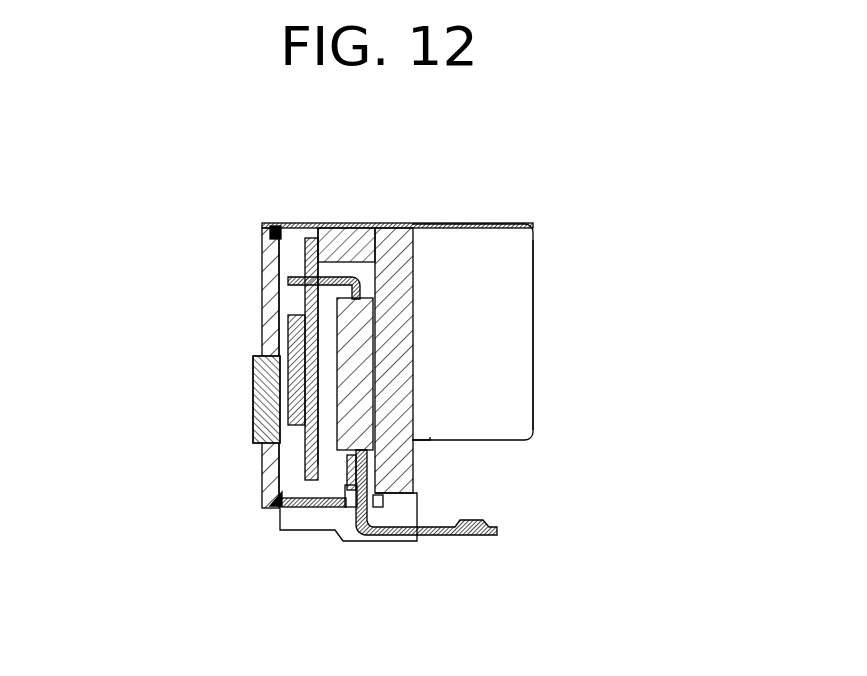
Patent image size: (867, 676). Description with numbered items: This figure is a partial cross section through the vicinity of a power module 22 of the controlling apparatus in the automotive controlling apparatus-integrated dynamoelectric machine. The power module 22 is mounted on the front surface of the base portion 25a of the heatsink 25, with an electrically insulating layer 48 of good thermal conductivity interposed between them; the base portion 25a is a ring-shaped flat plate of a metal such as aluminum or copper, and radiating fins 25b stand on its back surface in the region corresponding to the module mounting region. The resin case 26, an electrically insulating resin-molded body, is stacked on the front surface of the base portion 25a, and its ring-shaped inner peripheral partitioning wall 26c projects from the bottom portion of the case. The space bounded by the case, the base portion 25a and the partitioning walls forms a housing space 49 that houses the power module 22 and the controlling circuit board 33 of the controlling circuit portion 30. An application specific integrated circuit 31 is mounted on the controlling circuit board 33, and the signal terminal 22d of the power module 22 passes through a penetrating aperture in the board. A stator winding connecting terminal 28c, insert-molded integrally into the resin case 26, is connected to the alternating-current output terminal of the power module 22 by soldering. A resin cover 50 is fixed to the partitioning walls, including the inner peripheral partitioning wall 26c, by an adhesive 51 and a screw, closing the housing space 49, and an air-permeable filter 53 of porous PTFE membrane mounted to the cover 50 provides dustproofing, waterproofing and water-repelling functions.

The power module 22 is at (362, 378).
The signal terminal 22d is at (363, 223).
The heatsink 25 is at (497, 223).
The base portion 25a is at (412, 270).
The radiating fin 25b is at (533, 292).
The resin case 26 is at (311, 223).
The inner peripheral partitioning wall 26c is at (340, 223).
The stator winding connecting terminal 28c is at (452, 537).
The controlling circuit portion 30 is at (298, 300).
The application specific integrated circuit 31 is at (287, 340).
The controlling circuit board 33 is at (307, 460).
The electrically insulating layer 48 is at (373, 334).
The housing space 49 is at (323, 487).
The resin cover 50 is at (262, 282).
The adhesive 51 is at (273, 227).
The air-permeable filter 53 is at (253, 403).